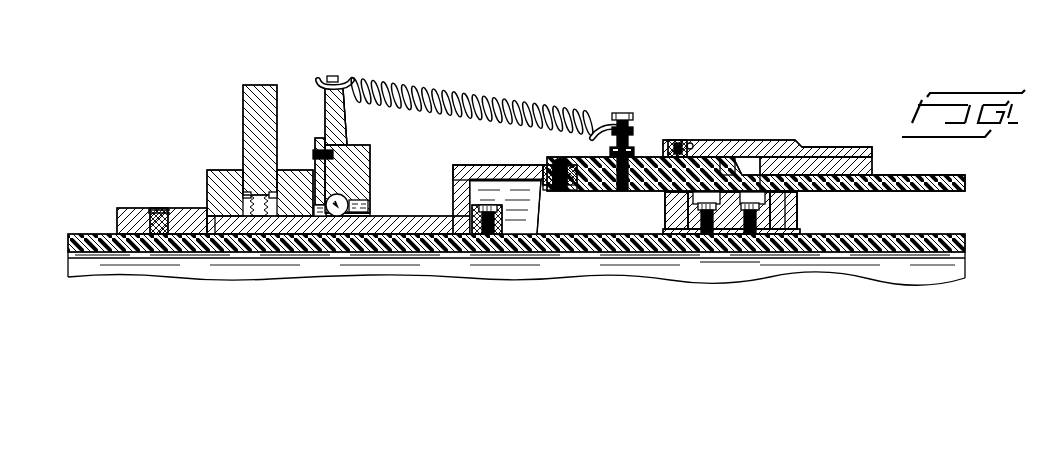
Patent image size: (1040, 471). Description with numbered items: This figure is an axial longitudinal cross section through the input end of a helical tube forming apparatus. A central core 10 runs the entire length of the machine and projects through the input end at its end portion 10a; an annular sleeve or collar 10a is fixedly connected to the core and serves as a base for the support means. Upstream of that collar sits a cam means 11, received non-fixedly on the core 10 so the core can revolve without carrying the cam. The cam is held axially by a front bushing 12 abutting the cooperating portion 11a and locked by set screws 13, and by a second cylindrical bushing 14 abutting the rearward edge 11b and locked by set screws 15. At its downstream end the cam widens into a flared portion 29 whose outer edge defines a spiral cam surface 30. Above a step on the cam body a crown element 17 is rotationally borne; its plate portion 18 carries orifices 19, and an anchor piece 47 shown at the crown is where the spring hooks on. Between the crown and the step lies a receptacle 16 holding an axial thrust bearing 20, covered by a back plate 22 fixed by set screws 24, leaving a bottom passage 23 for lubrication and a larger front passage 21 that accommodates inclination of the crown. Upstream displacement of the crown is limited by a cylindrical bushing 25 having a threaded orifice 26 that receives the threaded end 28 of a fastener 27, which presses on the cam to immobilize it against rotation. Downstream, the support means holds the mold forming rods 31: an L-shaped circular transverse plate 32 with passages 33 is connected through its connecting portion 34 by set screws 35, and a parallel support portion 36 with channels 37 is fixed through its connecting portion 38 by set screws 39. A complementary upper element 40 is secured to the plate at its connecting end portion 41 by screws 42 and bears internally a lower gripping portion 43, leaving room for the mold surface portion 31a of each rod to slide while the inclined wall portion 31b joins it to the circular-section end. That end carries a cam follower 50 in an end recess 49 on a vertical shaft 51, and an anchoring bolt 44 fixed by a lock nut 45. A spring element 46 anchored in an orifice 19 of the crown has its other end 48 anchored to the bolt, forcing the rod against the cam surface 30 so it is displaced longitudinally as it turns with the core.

The central core 10 is at (885, 270).
The first annular sleeve 10a is at (726, 268).
The cam means 11 is at (396, 230).
The cooperating portion 11a is at (471, 189).
The rearward edge 11b is at (210, 236).
The front bushing 12 is at (492, 236).
The set screws 13 is at (487, 196).
The second cylindrical bushing 14 is at (127, 207).
The set screws 15 is at (160, 207).
The receptacle 16 is at (340, 230).
The crown element 17 is at (371, 162).
The crown plate portion 18 is at (325, 108).
The orifices 19 is at (332, 75).
The bearing 20 is at (348, 200).
The front passage 21 is at (369, 206).
The back plate 22 is at (317, 140).
The bottom passage 23 is at (319, 218).
The set screws 24 is at (313, 154).
The cylindrical bushing 25 is at (222, 192).
The circular orifice 26 is at (243, 180).
The fastener 27 is at (252, 100).
The threaded end 28 is at (259, 218).
The flared portion 29 is at (520, 172).
The cam surface 30 is at (537, 236).
The mold forming rod 31 is at (648, 158).
The mold surface portion 31a is at (940, 176).
The inclined wall portion 31b is at (736, 158).
The circular transverse plate 32 is at (673, 236).
The passages 33 is at (668, 212).
The connecting portion 34 is at (700, 214).
The set screws 35 is at (706, 236).
The support portion 36 is at (782, 224).
The channels 37 is at (798, 210).
The connecting portion 38 is at (772, 236).
The set screws 39 is at (751, 236).
The complementary upper element 40 is at (770, 140).
The connecting end portion 41 is at (693, 145).
The screws 42 is at (679, 140).
The lower gripping portion 43 is at (836, 147).
The anchoring element 44 is at (622, 112).
The lock nut 45 is at (609, 153).
The spring element 46 is at (482, 96).
The hook 47 is at (318, 78).
The spring end 48 is at (605, 124).
The end recess 49 is at (566, 191).
The cam follower 50 is at (549, 160).
The vertical shaft 51 is at (557, 160).